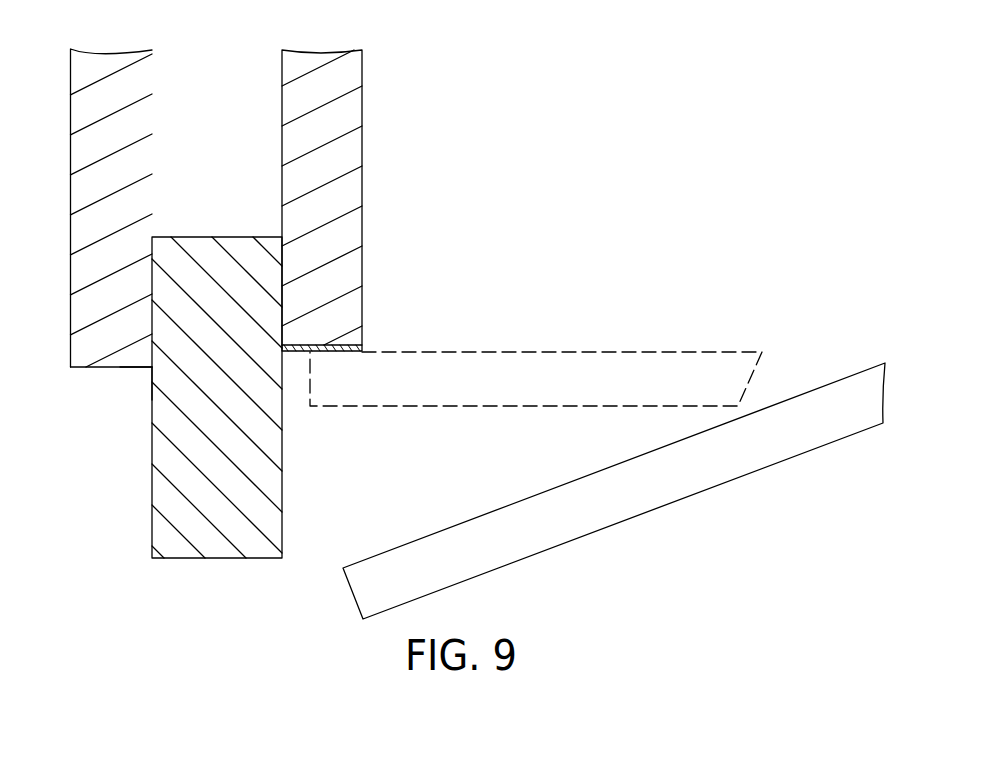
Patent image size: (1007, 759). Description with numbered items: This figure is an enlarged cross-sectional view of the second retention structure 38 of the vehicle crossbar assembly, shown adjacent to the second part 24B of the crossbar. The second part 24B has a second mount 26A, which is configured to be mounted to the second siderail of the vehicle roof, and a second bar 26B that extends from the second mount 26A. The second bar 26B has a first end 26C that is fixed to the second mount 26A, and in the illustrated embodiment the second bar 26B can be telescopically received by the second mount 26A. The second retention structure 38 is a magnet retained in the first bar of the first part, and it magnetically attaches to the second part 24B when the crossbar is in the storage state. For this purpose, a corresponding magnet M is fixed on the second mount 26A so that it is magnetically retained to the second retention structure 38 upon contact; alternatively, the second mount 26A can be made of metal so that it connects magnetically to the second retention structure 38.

The second part 24B is at (73, 475).
The second mount 26A is at (108, 82).
The second bar 26B is at (152, 485).
The first end 26C is at (138, 385).
The magnet M is at (332, 347).
The second retention structure 38 is at (638, 537).